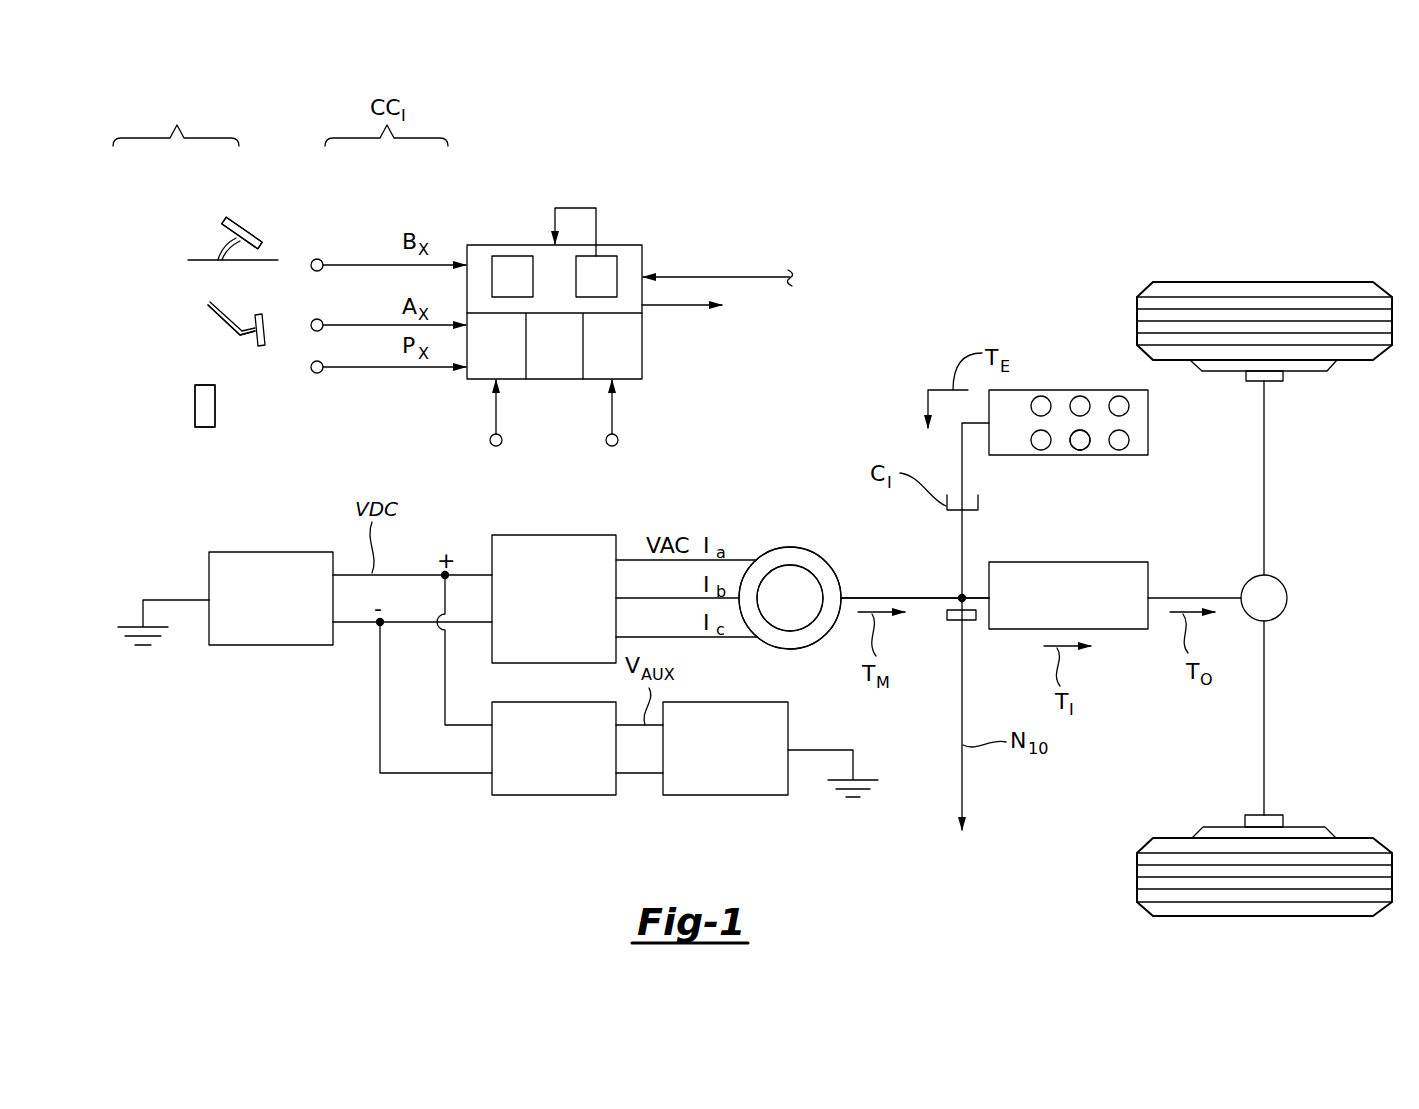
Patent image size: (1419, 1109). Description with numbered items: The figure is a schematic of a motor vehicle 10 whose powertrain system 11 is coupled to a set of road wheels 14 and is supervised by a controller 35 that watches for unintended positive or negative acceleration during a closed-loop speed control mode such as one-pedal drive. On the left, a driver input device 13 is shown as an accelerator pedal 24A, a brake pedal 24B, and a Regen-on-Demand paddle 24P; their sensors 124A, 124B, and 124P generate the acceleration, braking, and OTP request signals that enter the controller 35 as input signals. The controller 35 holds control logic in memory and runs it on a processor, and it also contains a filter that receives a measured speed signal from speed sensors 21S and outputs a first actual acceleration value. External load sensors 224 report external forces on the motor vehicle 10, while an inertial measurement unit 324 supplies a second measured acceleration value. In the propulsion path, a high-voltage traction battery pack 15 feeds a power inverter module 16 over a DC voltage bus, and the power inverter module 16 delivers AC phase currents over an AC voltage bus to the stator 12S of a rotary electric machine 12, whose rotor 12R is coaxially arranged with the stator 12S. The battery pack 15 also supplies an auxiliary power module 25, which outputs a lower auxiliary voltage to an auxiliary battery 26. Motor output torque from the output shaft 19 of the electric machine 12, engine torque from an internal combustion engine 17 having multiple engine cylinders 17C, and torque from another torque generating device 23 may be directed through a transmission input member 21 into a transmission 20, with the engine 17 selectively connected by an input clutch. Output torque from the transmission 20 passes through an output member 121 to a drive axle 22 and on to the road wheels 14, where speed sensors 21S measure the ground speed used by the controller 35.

The motor vehicle 10 is at (1161, 241).
The powertrain system 11 is at (1033, 304).
The rotary electric machine 12 is at (793, 547).
The stator 12S is at (802, 560).
The rotor 12R is at (800, 632).
The driver input device 13 is at (195, 261).
The road wheels 14 is at (1265, 282).
The high-voltage traction battery pack 15 is at (271, 552).
The power inverter module 16 is at (552, 535).
The internal combustion engine 17 is at (1072, 390).
The engine cylinders 17C is at (1080, 445).
The output shaft 19 is at (862, 591).
The transmission 20 is at (1078, 562).
The transmission input member 21 is at (977, 594).
The speed sensors 21S is at (958, 622).
The drive axles 22 is at (1265, 474).
The torque generating device 23 is at (850, 412).
The accelerator pedal 24A is at (199, 297).
The brake pedal 24B is at (199, 209).
The Regen-on-Demand paddle 24P is at (199, 377).
The auxiliary power module 25 is at (553, 795).
The auxiliary battery 26 is at (730, 795).
The controller 35 is at (528, 245).
The output member 121 is at (1190, 592).
The accelerator pedal sensor 124A is at (313, 320).
The brake pedal sensor 124B is at (317, 259).
The paddle sensor 124P is at (314, 373).
The external load sensors 224 is at (490, 441).
The inertial measurement unit 324 is at (618, 441).